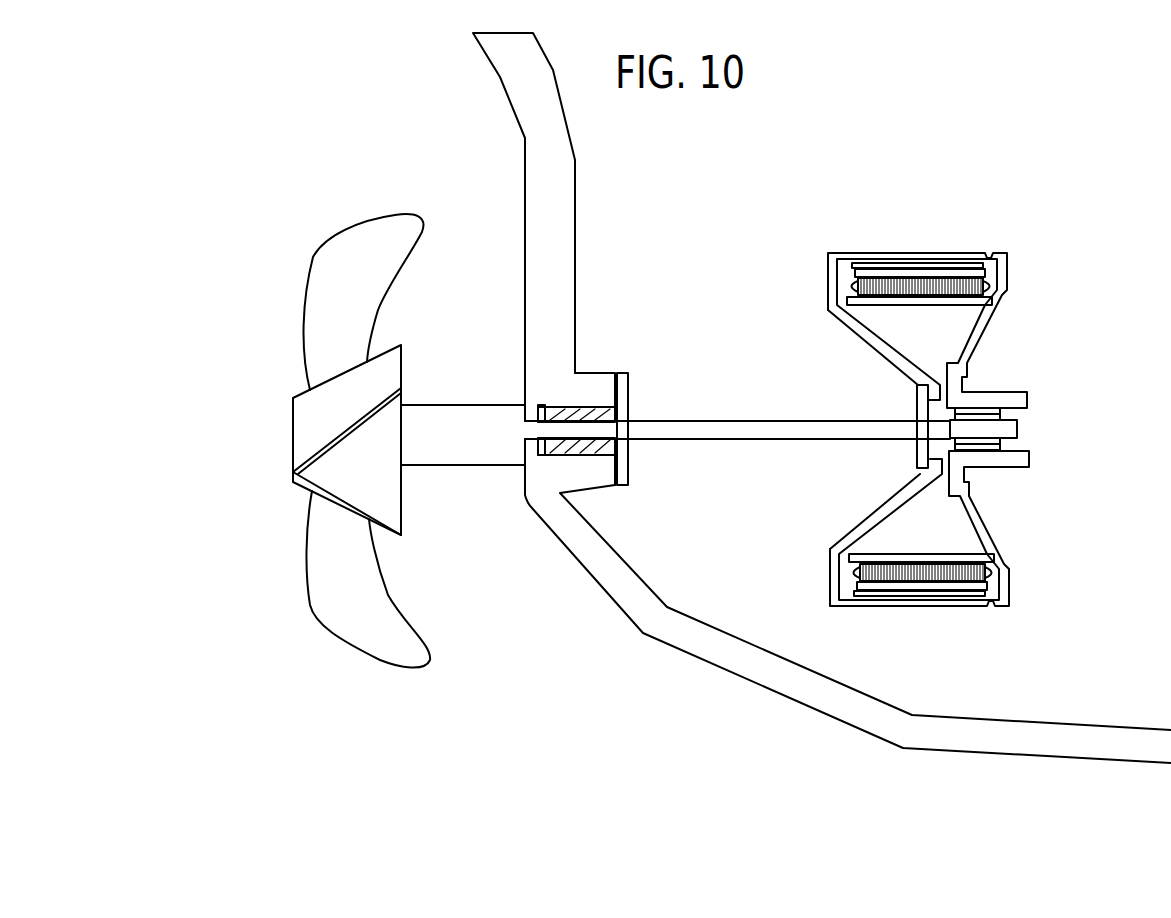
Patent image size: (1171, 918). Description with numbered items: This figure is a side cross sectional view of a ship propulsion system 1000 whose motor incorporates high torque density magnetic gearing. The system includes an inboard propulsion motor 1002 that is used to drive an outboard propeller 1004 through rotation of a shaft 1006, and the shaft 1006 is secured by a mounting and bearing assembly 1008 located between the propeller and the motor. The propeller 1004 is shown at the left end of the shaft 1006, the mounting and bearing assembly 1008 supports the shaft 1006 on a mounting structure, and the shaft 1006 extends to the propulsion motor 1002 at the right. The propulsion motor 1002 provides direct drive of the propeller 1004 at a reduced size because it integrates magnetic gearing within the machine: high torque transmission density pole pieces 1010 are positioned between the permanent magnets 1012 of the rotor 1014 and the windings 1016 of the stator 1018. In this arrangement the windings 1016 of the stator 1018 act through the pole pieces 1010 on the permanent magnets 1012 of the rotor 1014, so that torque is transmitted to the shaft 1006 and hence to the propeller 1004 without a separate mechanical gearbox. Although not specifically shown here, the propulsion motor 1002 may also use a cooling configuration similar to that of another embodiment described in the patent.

The ship propulsion system 1000 is at (254, 174).
The inboard propulsion motor 1002 is at (833, 233).
The outboard propeller 1004 is at (357, 242).
The shaft 1006 is at (753, 433).
The mounting and bearing assembly 1008 is at (591, 380).
The pole pieces 1010 is at (942, 272).
The permanent magnets 1012 is at (940, 595).
The rotor 1014 is at (832, 280).
The windings 1016 is at (850, 573).
The stator 1018 is at (918, 555).